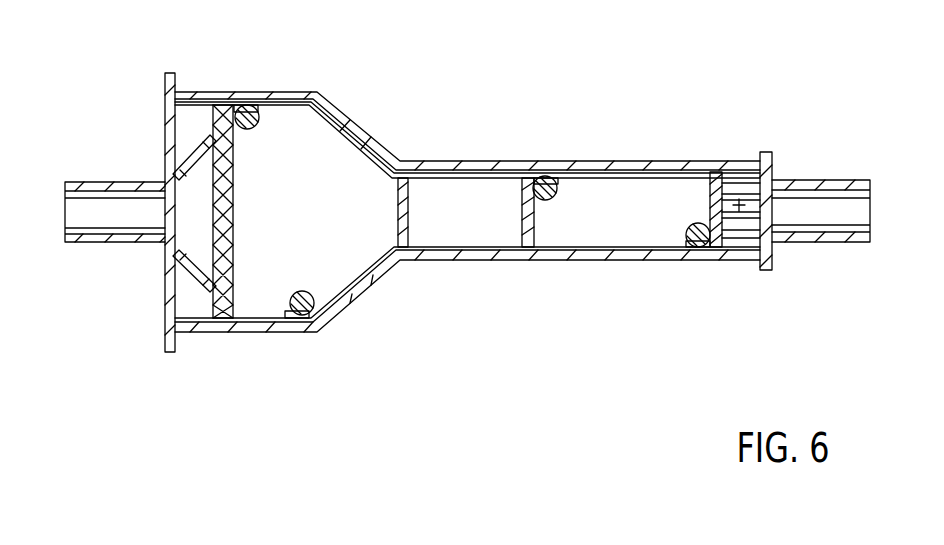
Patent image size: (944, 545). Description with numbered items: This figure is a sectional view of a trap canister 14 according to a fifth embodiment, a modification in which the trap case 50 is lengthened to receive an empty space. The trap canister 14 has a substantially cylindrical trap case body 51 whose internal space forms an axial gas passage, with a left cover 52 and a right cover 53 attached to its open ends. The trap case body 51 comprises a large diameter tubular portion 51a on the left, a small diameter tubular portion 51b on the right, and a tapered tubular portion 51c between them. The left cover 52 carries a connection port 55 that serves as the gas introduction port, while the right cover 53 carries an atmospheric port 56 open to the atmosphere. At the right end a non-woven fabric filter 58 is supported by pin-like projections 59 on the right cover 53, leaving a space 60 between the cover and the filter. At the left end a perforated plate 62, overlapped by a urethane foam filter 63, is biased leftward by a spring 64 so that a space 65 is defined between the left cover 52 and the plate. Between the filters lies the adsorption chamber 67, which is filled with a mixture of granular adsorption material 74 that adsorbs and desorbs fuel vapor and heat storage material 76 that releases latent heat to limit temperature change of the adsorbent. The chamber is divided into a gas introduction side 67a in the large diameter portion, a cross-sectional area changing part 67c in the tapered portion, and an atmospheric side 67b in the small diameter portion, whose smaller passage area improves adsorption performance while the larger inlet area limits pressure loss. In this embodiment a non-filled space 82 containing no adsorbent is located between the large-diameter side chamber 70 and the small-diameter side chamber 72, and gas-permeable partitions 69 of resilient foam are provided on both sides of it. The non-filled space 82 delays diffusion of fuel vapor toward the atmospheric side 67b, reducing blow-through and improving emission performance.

The trap canister 14 is at (559, 90).
The trap case 50 is at (369, 89).
The trap case body 51 is at (366, 294).
The large diameter tubular portion 51a is at (293, 91).
The small diameter tubular portion 51b is at (665, 160).
The tapered tubular portion 51c is at (385, 150).
The left cover 52 is at (165, 125).
The right cover 53 is at (773, 165).
The connection port 55 is at (88, 244).
The atmospheric port 56 is at (828, 242).
The filter 58 is at (716, 174).
The pin-like projections 59 is at (745, 262).
The space 60 is at (745, 184).
The perforated plate 62 is at (215, 322).
The filter 63 is at (234, 225).
The spring 64 is at (180, 288).
The space 65 is at (196, 326).
The adsorption chamber 67 is at (609, 226).
The gas introduction side 67a is at (265, 321).
The atmospheric side 67b is at (645, 251).
The cross-sectional area changing part 67c is at (345, 150).
The gas-permeable partition 69 is at (397, 206).
The large-diameter side chamber 70 is at (305, 135).
The small-diameter side chamber 72 is at (622, 193).
The granular adsorption material 74 is at (240, 104).
The heat storage material 76 is at (248, 126).
The non-filled space 82 is at (476, 238).